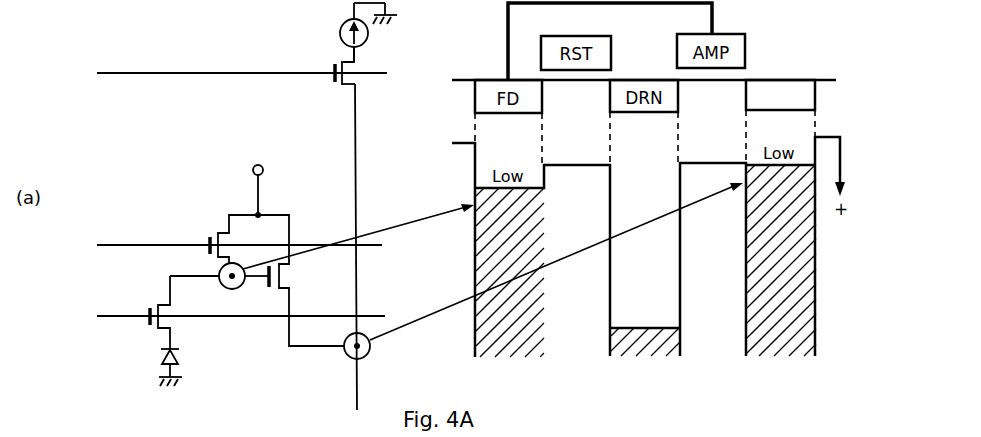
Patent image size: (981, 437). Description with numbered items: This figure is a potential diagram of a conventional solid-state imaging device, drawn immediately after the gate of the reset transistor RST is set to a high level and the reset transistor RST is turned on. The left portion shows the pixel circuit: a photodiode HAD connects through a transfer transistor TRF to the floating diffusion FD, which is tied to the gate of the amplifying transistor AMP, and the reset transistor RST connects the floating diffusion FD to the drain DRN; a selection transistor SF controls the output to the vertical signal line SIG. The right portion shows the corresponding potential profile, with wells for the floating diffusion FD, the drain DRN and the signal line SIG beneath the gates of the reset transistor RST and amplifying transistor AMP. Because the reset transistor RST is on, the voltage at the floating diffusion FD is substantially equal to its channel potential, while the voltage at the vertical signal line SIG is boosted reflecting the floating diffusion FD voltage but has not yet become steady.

The source follower selection transistor SF is at (240, 66).
The reset transistor RST is at (239, 239).
The transfer transistor TRF is at (240, 312).
The photodiode HAD is at (146, 367).
The floating diffusion FD is at (219, 288).
The drain DRN is at (257, 179).
The amplifying transistor AMP is at (306, 304).
The vertical signal line SIG is at (780, 95).